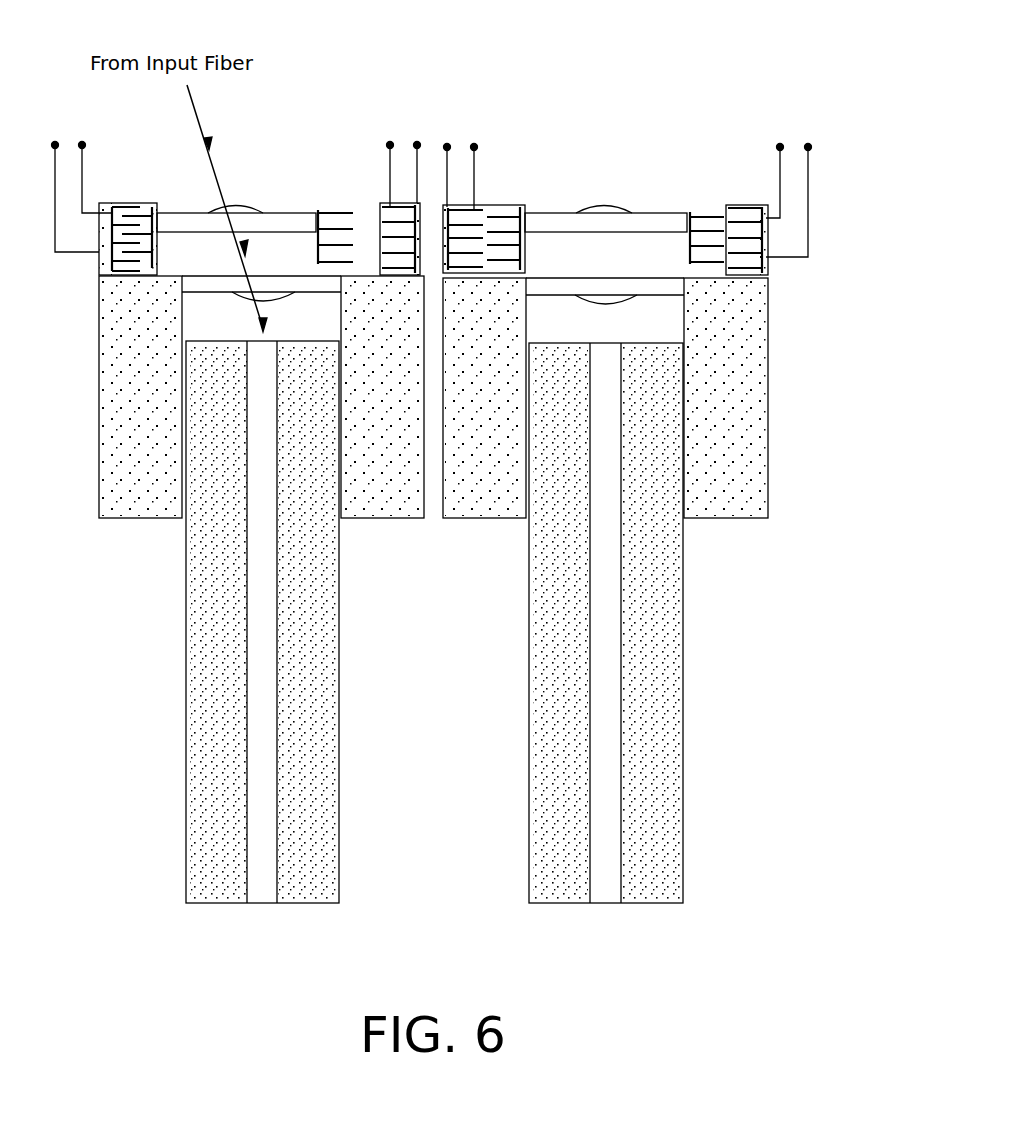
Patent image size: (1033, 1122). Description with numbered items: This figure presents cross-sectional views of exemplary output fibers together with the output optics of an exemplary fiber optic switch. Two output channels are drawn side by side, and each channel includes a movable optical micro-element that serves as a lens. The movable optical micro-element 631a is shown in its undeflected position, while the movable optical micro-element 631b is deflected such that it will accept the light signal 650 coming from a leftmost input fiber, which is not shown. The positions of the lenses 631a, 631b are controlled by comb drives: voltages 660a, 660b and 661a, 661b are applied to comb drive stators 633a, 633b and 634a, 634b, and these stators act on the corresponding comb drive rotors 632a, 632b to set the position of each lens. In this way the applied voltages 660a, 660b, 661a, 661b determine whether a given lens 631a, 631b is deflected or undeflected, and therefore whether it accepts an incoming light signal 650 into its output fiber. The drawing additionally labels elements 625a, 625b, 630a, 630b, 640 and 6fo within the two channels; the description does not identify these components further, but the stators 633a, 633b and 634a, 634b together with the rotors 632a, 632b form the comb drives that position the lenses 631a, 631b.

The comb drive electrode 625a is at (696, 212).
The comb drive electrode 625b is at (322, 210).
The movable lens plate 630a is at (560, 213).
The movable lens plate 630b is at (277, 212).
The movable optical micro-element 631a is at (605, 207).
The movable optical micro-element 631b is at (245, 207).
The comb drive rotor 632a is at (512, 207).
The comb drive rotor 632b is at (150, 207).
The comb drive stator 633a is at (463, 216).
The comb drive stator 633b is at (123, 205).
The comb drive stator 634a is at (745, 205).
The comb drive stator 634b is at (385, 203).
The fixed lens plate 640 is at (201, 290).
The fixed lens plate 6fo is at (652, 297).
The light signal 650 is at (199, 113).
The voltage 660a is at (463, 112).
The voltage 660b is at (63, 112).
The voltage 661a is at (793, 112).
The voltage 661b is at (403, 112).